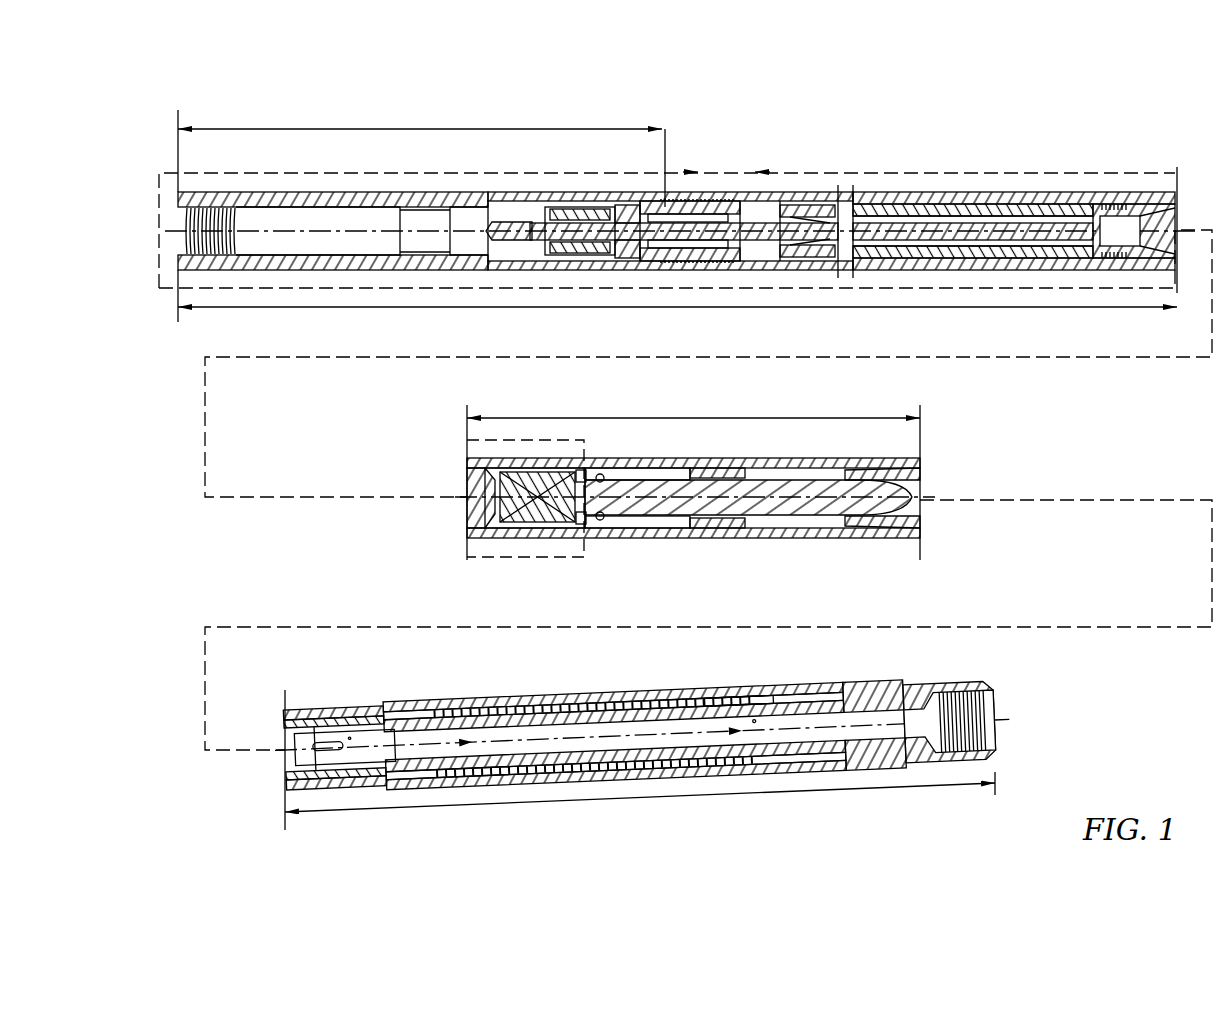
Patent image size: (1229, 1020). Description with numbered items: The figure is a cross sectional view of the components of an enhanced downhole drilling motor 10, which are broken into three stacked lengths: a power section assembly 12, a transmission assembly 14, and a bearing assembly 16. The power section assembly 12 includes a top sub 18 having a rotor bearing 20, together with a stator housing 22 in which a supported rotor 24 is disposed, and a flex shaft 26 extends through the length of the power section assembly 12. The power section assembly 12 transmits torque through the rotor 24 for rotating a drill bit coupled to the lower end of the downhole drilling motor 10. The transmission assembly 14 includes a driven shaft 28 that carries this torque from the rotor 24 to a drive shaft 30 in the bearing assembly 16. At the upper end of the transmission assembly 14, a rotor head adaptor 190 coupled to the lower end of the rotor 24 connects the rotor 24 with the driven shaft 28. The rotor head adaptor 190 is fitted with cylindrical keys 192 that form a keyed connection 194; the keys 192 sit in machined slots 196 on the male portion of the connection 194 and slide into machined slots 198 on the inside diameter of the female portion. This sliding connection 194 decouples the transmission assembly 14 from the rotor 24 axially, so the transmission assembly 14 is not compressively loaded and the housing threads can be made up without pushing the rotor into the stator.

The downhole drilling motor 10 is at (203, 95).
The power section assembly 12 is at (628, 307).
The transmission assembly 14 is at (683, 418).
The bearing assembly 16 is at (628, 798).
The top sub 18 is at (425, 129).
The rotor bearing 20 is at (577, 218).
The stator housing 22 is at (790, 200).
The rotor 24 is at (940, 210).
The flex shaft 26 is at (995, 215).
The driven shaft 28 is at (770, 512).
The drive shaft 30 is at (730, 705).
The rotor head adaptor 190 is at (487, 522).
The keys 192 is at (530, 512).
The keyed connection 194 is at (570, 548).
The machined slots 196 is at (588, 470).
The machined slots 198 is at (575, 516).